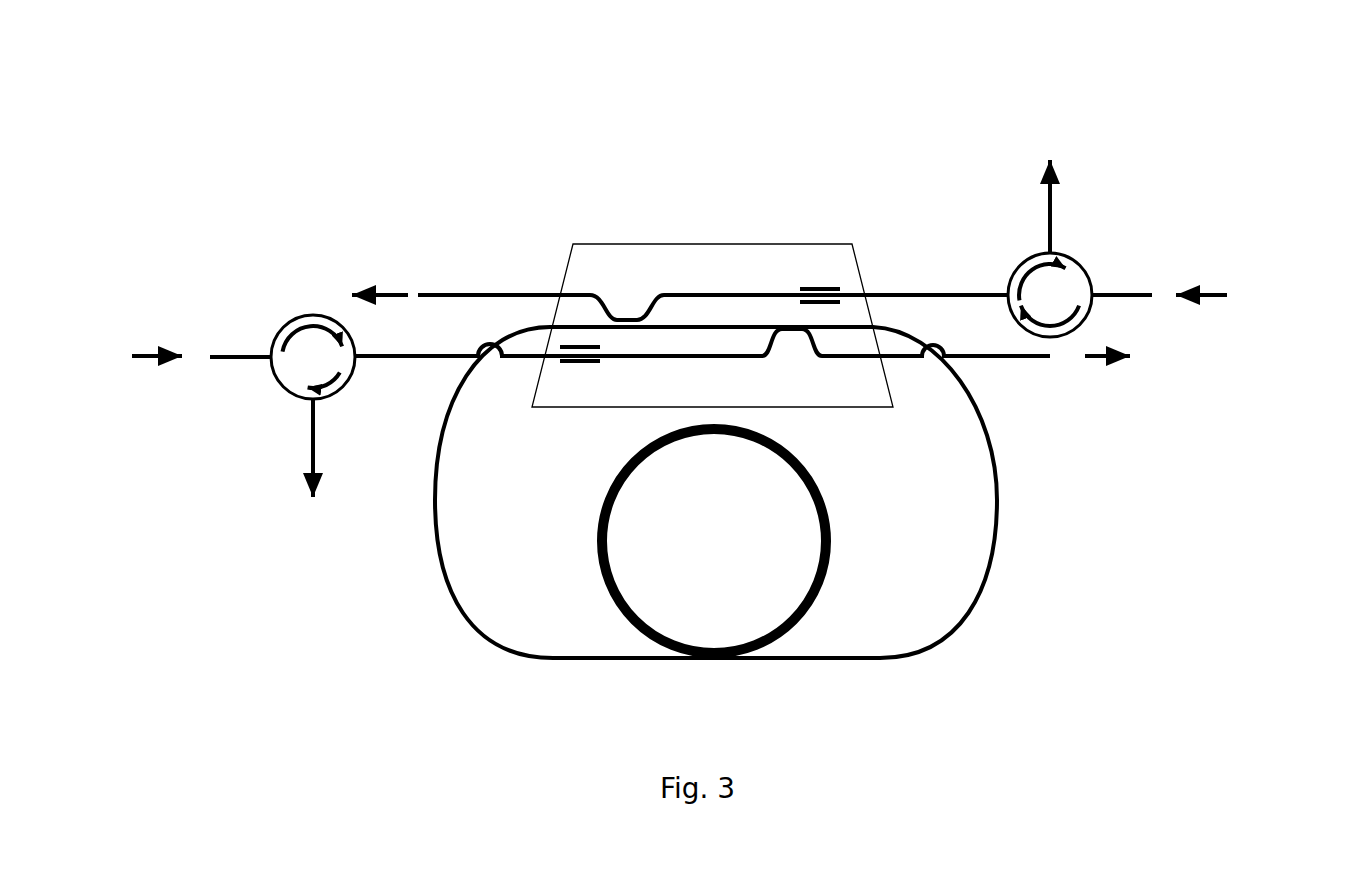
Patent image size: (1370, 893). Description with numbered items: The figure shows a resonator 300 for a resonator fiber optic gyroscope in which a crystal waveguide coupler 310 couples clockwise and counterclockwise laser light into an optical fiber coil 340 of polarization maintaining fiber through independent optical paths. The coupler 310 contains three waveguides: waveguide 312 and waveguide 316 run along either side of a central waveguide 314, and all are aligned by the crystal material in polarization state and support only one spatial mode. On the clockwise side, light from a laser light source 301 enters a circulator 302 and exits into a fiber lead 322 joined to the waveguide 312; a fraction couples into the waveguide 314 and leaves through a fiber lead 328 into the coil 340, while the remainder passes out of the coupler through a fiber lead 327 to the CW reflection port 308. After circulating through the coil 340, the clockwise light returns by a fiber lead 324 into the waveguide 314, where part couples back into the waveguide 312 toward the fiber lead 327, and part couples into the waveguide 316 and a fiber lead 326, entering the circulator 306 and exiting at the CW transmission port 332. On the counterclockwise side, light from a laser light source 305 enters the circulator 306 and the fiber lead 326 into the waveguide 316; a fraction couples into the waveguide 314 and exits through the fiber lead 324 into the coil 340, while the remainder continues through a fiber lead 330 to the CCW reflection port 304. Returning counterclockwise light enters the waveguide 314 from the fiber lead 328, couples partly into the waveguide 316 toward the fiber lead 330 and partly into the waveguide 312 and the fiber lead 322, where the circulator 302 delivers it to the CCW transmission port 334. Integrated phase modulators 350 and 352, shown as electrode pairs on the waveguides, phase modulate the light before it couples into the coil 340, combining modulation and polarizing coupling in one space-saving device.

The resonator 300 is at (702, 125).
The laser light source 301 is at (243, 362).
The circulator 302 is at (280, 387).
The CCW reflection port 304 is at (438, 292).
The laser light source 305 is at (1153, 296).
The circulator 306 is at (1080, 258).
The CW reflection port 308 is at (1050, 358).
The crystal waveguide coupler 310 is at (638, 245).
The waveguide 312 is at (646, 357).
The waveguide 314 is at (758, 323).
The waveguide 316 is at (685, 294).
The fiber lead 322 is at (432, 355).
The fiber lead 324 is at (518, 338).
The fiber lead 326 is at (966, 292).
The fiber lead 327 is at (975, 357).
The fiber lead 328 is at (900, 328).
The fiber lead 330 is at (522, 292).
The CW transmission port 332 is at (1042, 187).
The CCW transmission port 334 is at (286, 465).
The optical fiber coil 340 is at (595, 542).
The integrated phase modulator 350 is at (830, 248).
The integrated phase modulator 352 is at (583, 362).